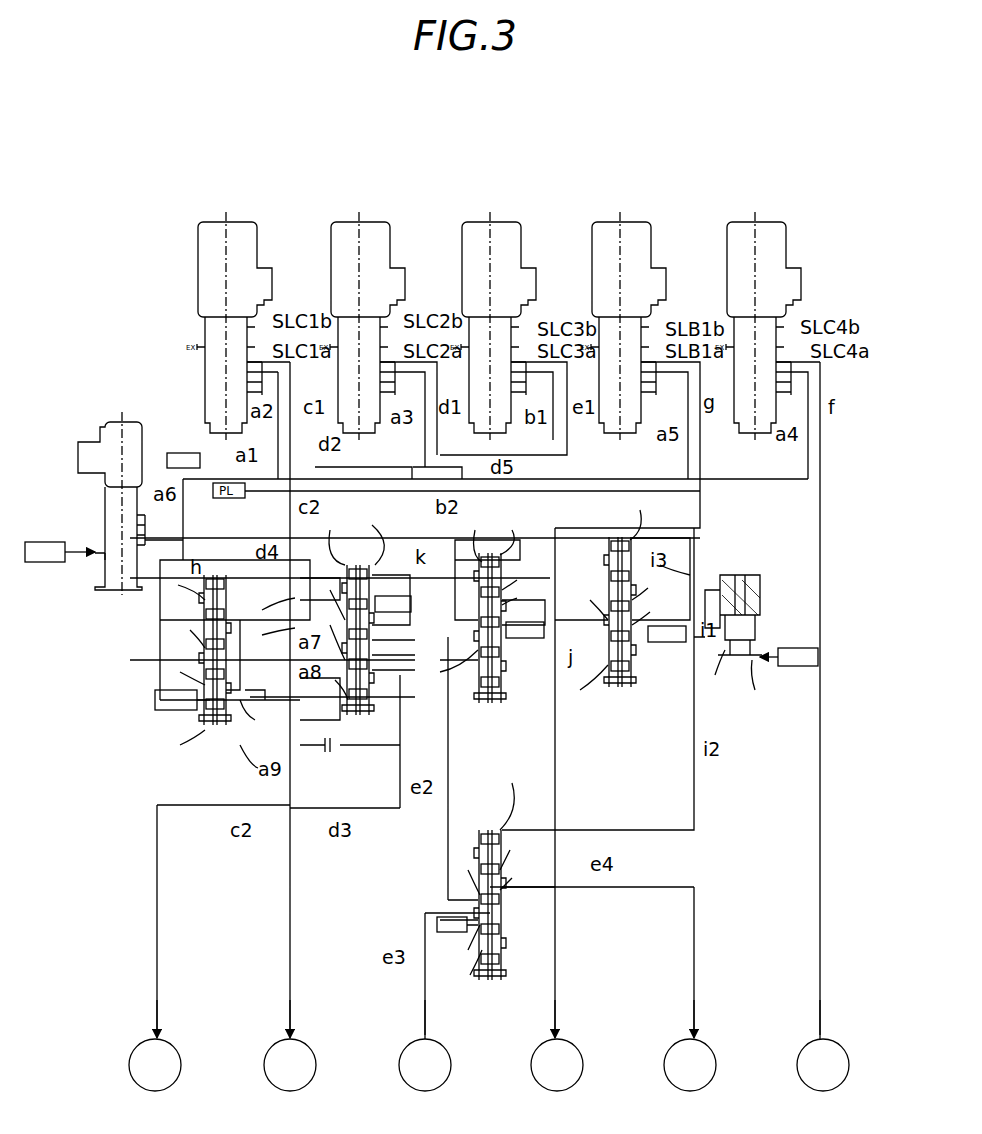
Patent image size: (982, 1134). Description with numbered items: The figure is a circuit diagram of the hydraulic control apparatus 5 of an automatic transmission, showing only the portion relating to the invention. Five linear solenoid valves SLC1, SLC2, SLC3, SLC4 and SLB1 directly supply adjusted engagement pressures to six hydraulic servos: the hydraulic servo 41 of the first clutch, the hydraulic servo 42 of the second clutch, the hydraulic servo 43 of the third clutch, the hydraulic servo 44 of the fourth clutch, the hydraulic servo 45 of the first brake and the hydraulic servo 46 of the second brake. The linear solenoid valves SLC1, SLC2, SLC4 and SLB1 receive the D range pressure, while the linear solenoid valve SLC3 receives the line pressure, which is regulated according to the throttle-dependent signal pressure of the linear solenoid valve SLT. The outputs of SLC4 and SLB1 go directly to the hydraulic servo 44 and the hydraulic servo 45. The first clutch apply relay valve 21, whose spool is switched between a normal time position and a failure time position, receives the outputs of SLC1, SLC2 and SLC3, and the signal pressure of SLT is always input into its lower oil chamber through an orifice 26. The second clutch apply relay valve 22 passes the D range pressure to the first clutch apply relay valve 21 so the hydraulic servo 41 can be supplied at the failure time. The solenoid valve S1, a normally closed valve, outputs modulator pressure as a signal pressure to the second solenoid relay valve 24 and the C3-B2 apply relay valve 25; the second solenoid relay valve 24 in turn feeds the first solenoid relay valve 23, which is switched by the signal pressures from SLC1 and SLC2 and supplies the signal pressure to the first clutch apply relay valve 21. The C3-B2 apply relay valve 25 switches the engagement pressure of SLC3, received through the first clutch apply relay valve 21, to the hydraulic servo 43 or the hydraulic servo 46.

The hydraulic control apparatus 5 is at (426, 142).
The first clutch apply relay valve 21 is at (358, 565).
The second clutch apply relay valve 22 is at (215, 572).
The first solenoid relay valve 23 is at (492, 552).
The second solenoid relay valve 24 is at (618, 536).
The C3-B2 apply relay valve 25 is at (490, 828).
The orifice 26 is at (335, 745).
The hydraulic servo of clutch C-1 41 is at (175, 1042).
The hydraulic servo of clutch C-2 42 is at (310, 1042).
The hydraulic servo of clutch C-3 43 is at (430, 1040).
The hydraulic servo of clutch C-4 44 is at (835, 1042).
The hydraulic servo of brake B-1 45 is at (565, 1042).
The hydraulic servo of brake B-2 46 is at (705, 1042).
The linear solenoid valve SLC1 is at (238, 297).
The linear solenoid valve SLC2 is at (388, 317).
The linear solenoid valve SLC3 is at (503, 305).
The linear solenoid valve SLB1 is at (640, 317).
The linear solenoid valve SLC4 is at (767, 317).
The linear solenoid valve SLT is at (114, 475).
The solenoid valve S1 is at (756, 614).